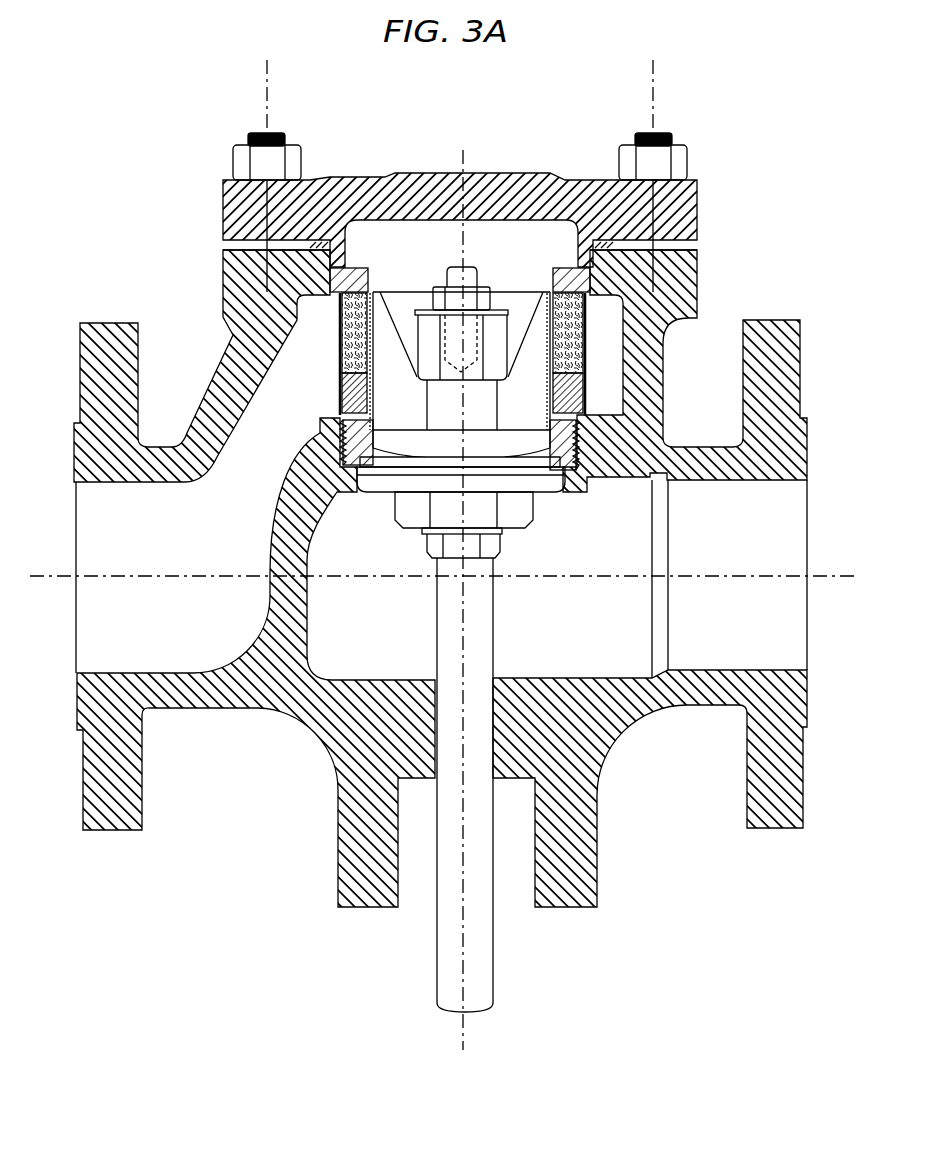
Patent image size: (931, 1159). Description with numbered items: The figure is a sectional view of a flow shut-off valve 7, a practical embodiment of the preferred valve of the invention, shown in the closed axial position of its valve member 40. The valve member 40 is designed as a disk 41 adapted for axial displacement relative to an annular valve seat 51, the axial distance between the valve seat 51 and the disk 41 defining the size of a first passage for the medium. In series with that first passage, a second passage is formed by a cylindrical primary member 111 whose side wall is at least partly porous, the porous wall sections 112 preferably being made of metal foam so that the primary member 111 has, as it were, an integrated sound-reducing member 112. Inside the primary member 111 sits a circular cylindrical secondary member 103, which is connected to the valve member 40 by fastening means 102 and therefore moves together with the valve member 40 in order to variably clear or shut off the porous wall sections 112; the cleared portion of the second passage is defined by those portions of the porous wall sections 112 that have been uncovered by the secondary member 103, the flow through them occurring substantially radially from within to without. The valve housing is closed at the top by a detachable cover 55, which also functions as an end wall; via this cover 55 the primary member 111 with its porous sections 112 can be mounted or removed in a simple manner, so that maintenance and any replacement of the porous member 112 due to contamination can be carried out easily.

The valve 7 is at (181, 201).
The detachable cover 55 is at (491, 181).
The fastening means 102 is at (532, 312).
The secondary member 103 is at (545, 390).
The porous wall sections 112 is at (587, 340).
The cylindrical primary member 111 is at (583, 403).
The annular valve seat 51 is at (583, 486).
The disk 41 is at (543, 483).
The valve member 40 is at (411, 593).